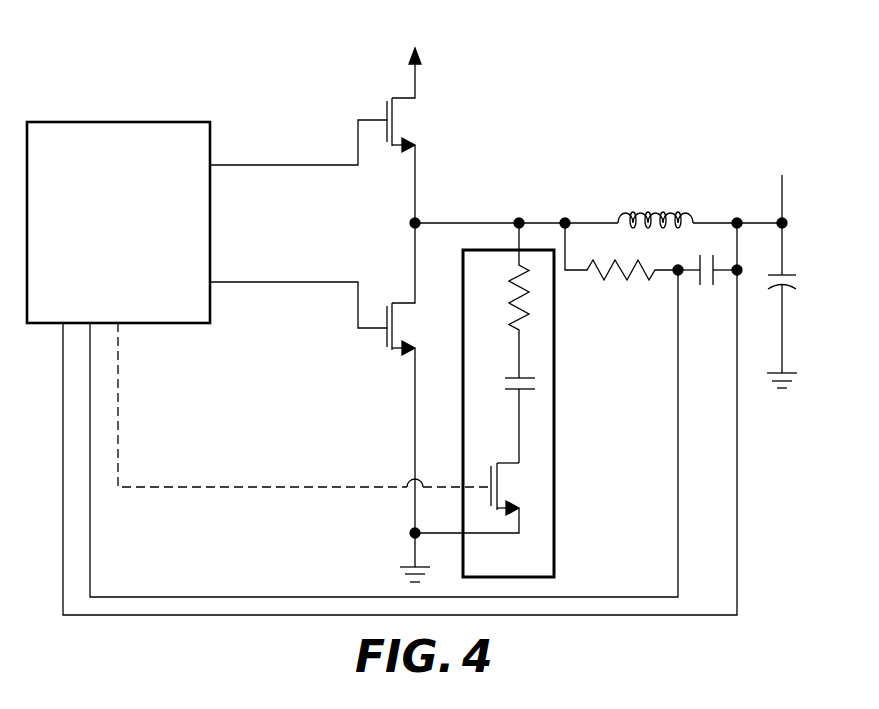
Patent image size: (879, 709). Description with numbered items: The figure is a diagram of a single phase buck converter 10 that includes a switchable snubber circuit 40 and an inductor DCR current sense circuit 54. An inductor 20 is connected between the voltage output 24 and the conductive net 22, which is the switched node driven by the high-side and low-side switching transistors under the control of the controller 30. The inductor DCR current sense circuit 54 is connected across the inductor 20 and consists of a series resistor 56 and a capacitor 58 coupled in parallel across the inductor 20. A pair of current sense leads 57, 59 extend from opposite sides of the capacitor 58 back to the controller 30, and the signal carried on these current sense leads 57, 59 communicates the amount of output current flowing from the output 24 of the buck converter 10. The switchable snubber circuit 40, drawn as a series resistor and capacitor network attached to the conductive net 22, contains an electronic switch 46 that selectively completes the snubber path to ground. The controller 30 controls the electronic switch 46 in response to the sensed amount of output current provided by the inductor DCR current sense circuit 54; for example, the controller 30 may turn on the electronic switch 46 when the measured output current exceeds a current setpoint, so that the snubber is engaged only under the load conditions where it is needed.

The single phase buck converter 10 is at (268, 55).
The controller 30 is at (131, 248).
The conductive net 22 is at (463, 221).
The inductor 20 is at (628, 207).
The voltage output 24 is at (755, 159).
The series resistor 56 is at (622, 280).
The capacitor 58 is at (710, 290).
The switchable snubber circuit 40 is at (555, 449).
The electronic switch 46 is at (510, 483).
The inductor DCR current sense circuit 54 is at (765, 430).
The current sense lead 57 is at (677, 562).
The current sense lead 59 is at (739, 533).